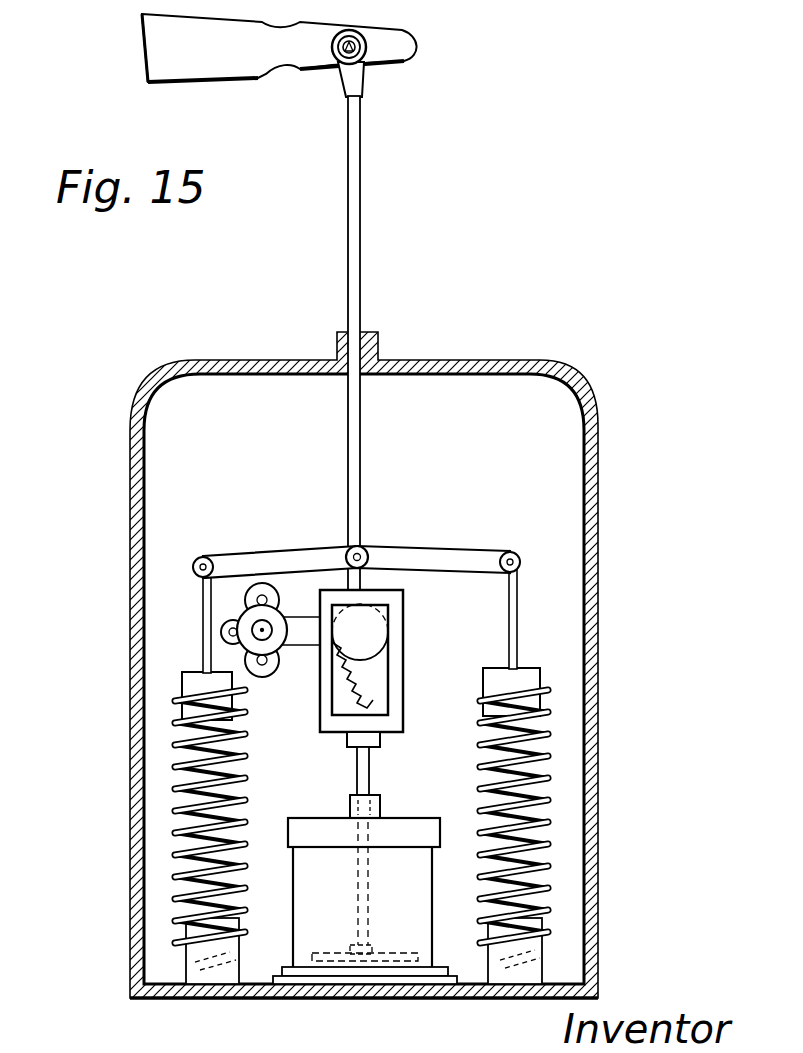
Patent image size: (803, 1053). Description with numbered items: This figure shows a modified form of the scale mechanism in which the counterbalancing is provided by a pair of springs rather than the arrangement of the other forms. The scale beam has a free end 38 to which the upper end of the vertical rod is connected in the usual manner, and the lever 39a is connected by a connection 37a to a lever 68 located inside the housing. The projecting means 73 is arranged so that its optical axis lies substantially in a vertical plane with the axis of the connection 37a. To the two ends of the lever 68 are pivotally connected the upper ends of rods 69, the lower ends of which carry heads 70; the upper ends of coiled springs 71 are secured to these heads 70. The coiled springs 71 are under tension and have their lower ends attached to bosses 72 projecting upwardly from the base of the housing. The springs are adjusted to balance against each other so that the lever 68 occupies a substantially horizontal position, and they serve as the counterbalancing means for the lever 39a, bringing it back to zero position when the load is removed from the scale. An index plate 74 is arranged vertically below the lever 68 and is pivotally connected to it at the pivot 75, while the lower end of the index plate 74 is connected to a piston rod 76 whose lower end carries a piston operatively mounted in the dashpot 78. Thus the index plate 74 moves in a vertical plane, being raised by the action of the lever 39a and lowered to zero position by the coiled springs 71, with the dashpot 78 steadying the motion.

The connection 37a is at (355, 220).
The free end of beam 38 is at (405, 60).
The lever 39a is at (150, 62).
The lever 68 is at (432, 557).
The rods 69 is at (205, 620).
The heads 70 is at (185, 688).
The coiled springs 71 is at (180, 790).
The bosses 72 is at (195, 975).
The projecting means 73 is at (360, 632).
The index plate 74 is at (378, 710).
The pivotal connection 75 is at (352, 555).
The piston rod 76 is at (366, 769).
The dashpot 78 is at (318, 852).